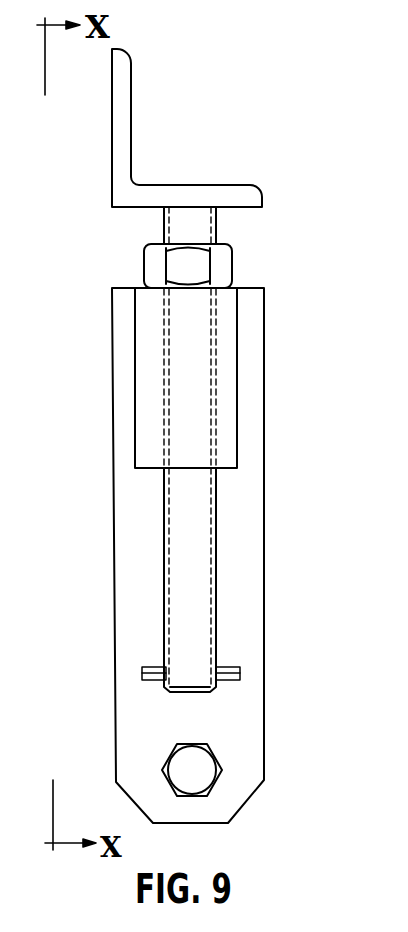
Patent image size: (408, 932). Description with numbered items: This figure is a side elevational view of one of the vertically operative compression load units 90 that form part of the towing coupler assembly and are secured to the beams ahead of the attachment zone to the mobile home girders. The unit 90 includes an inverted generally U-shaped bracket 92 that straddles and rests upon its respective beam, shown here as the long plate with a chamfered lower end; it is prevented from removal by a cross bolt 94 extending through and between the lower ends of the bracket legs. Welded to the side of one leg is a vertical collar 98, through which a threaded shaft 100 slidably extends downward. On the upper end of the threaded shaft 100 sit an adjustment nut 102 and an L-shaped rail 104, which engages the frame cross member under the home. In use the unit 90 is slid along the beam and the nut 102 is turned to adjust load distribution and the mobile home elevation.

The compression load unit 90 is at (280, 244).
The inverted generally U-shaped bracket 92 is at (253, 512).
The cross bolt 94 is at (200, 765).
The vertical collar 98 is at (228, 378).
The threaded shaft 100 is at (174, 224).
The adjustment nut 102 is at (148, 265).
The L-shaped rail 104 is at (134, 190).